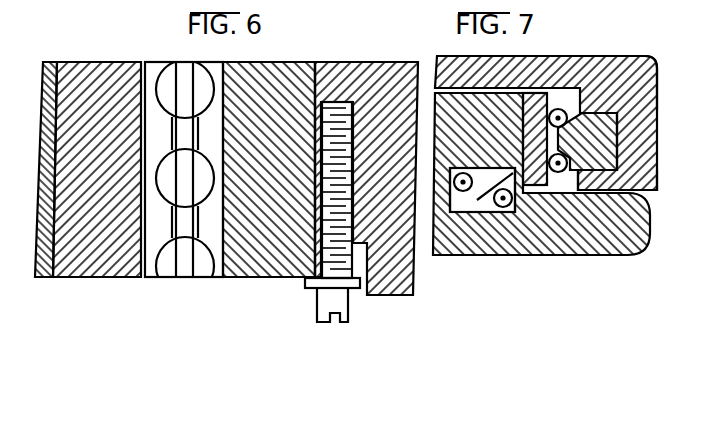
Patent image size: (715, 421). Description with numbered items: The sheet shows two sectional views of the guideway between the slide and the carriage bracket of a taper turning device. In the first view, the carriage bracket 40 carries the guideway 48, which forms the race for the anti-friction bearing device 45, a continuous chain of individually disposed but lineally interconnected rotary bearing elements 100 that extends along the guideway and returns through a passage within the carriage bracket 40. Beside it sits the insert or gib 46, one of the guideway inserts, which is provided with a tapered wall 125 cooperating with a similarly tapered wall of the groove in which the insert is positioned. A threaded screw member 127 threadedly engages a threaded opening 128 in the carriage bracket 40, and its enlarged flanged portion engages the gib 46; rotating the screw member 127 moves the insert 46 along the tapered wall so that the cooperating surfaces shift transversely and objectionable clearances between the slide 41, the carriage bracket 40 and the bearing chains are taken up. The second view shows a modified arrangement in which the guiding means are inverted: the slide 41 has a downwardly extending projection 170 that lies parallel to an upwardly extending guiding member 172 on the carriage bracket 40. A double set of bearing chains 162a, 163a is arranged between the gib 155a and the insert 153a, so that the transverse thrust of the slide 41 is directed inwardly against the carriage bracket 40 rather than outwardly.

In FIG. 6, the carriage bracket 40 is at (383, 80).
In FIG. 7, the carriage bracket 40 is at (537, 240).
In FIG. 7, the slide 41 is at (584, 70).
In FIG. 6, the anti-friction bearing device 45 is at (162, 278).
In FIG. 6, the insert or gib 46 is at (270, 78).
In FIG. 6, the guideway 48 is at (103, 277).
In FIG. 6, the rotary bearing elements 100 is at (168, 82).
In FIG. 6, the tapered wall 125 is at (312, 80).
In FIG. 6, the threaded screw member 127 is at (348, 306).
In FIG. 6, the threaded opening 128 is at (343, 100).
In FIG. 7, the insert 153a is at (535, 107).
In FIG. 7, the gib 155a is at (618, 120).
In FIG. 7, the bearing chain 162a is at (641, 66).
In FIG. 7, the bearing chain 163a is at (482, 190).
In FIG. 7, the downwardly extending projection 170 is at (643, 172).
In FIG. 7, the upwardly extending guiding member 172 is at (523, 106).